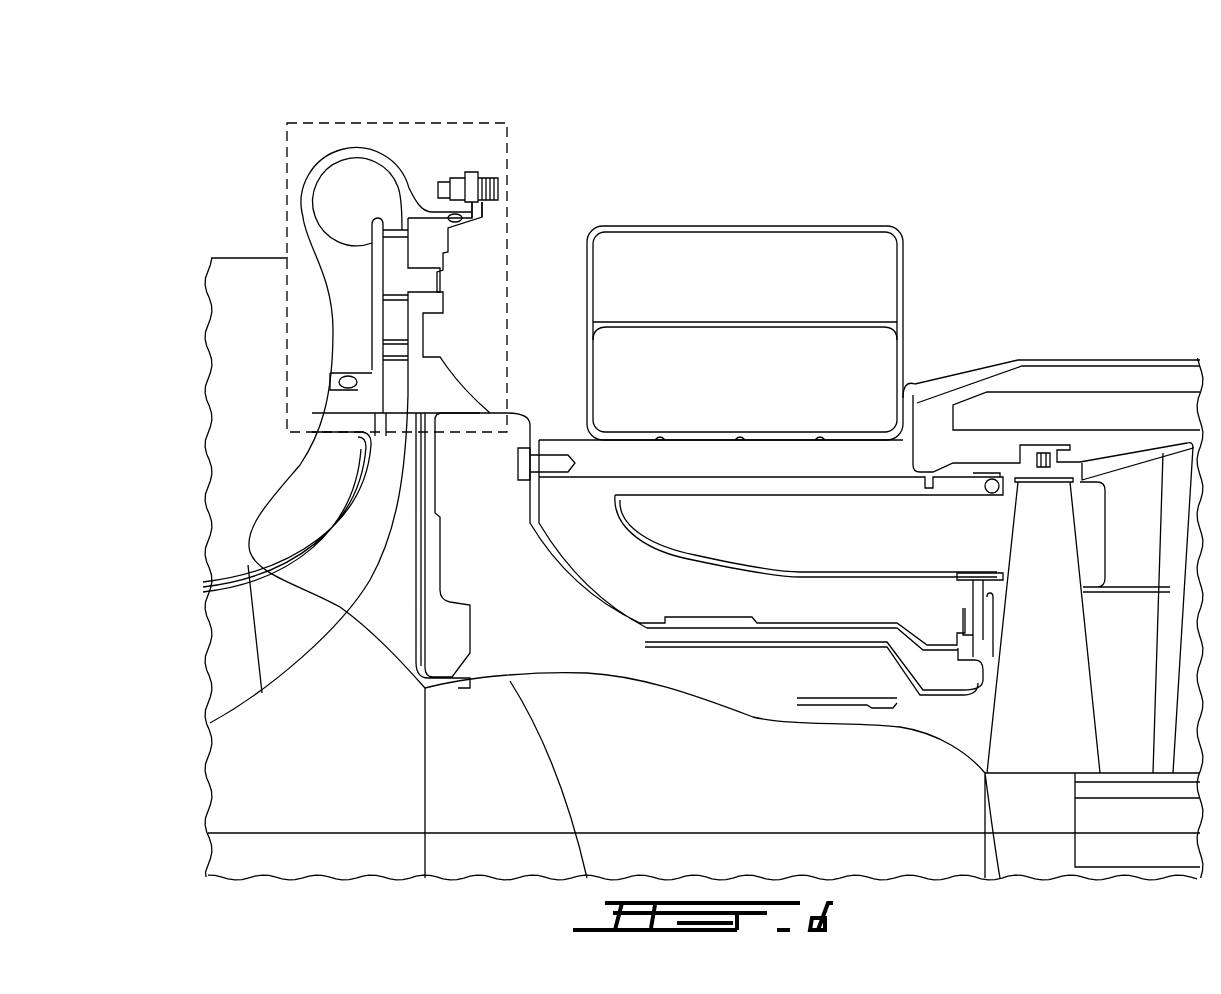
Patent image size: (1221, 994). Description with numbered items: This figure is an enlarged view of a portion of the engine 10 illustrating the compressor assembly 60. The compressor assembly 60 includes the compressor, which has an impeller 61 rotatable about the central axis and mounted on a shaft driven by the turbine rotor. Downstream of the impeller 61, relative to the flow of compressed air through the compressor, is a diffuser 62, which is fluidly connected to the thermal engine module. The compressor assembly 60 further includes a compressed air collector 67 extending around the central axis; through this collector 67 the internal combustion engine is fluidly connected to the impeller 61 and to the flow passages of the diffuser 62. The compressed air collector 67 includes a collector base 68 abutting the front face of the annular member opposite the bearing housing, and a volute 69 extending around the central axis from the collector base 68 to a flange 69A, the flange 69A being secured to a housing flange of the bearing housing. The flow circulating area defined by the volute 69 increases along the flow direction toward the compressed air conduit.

The gas turbine engine 10 is at (288, 341).
The compressor assembly 60 is at (212, 180).
The impeller 61 is at (247, 602).
The diffuser 62 is at (390, 145).
The compressed air collector 67 is at (300, 255).
The collector base 68 is at (353, 320).
The volute 69 is at (333, 155).
The flange 69A is at (467, 173).